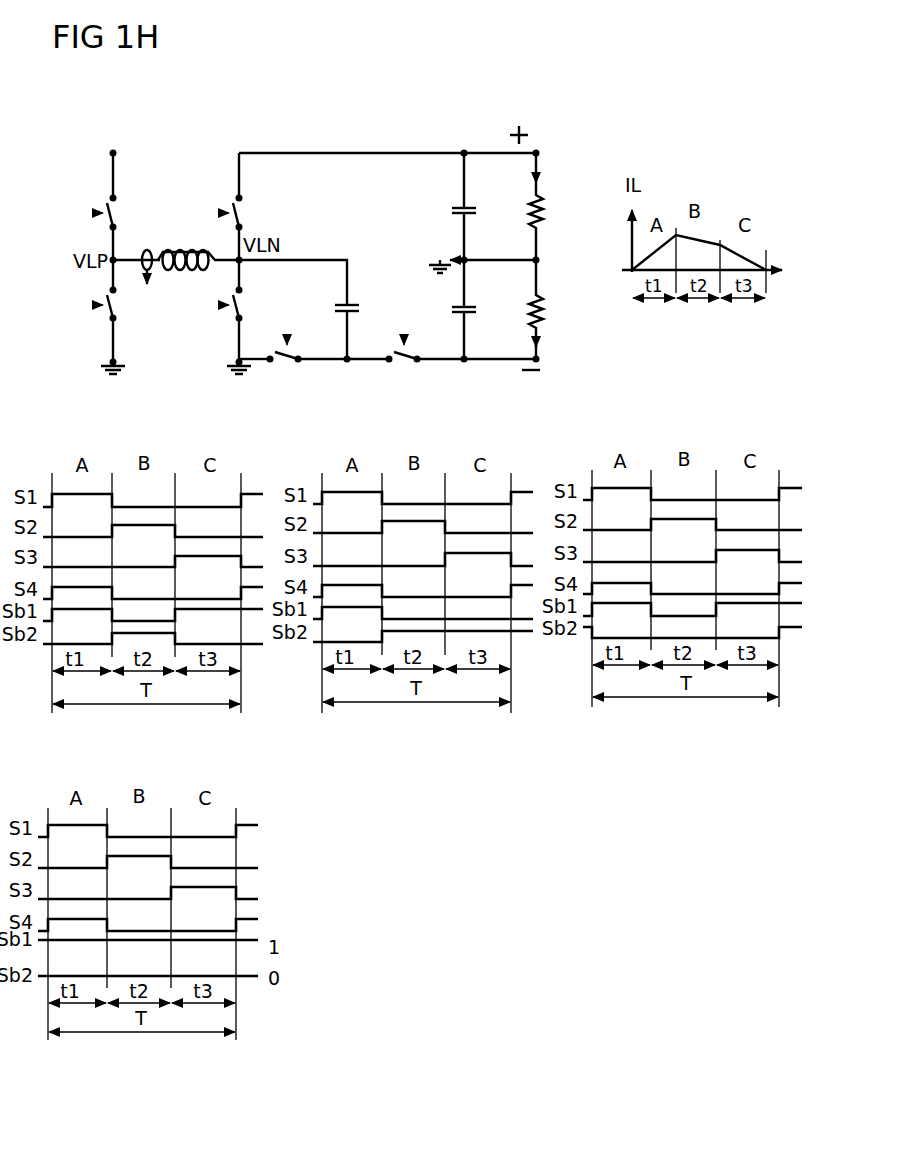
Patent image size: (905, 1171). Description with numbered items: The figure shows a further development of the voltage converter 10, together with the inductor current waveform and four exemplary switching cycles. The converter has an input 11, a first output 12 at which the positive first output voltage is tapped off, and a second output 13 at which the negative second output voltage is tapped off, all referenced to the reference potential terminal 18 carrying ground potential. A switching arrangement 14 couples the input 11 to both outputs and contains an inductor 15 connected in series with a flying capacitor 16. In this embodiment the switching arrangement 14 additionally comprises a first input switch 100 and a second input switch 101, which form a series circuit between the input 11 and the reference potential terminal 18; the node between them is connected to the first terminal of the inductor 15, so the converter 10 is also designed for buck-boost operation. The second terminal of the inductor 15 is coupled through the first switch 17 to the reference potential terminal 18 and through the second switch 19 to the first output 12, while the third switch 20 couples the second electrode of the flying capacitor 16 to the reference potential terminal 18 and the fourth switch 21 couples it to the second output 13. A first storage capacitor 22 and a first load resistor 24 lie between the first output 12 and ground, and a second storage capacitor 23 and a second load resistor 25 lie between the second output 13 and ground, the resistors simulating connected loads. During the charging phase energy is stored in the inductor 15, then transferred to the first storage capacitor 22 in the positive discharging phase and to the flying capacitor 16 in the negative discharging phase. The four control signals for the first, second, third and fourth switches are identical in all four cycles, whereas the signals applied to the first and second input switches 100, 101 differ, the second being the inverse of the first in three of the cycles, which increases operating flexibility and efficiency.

The voltage converter 10 is at (257, 131).
The input 11 is at (113, 153).
The first output 12 is at (544, 153).
The second output 13 is at (544, 357).
The switching arrangement 14 is at (175, 224).
The inductor 15 is at (176, 250).
The flying capacitor 16 is at (352, 314).
The first switch 17 is at (244, 312).
The reference potential terminal 18 is at (106, 372).
The second switch 19 is at (244, 222).
The third switch 20 is at (296, 352).
The fourth switch 21 is at (414, 353).
The first storage capacitor 22 is at (453, 221).
The second storage capacitor 23 is at (456, 313).
The first load resistor 24 is at (545, 209).
The second load resistor 25 is at (545, 312).
The first input switch 100 is at (106, 226).
The second input switch 101 is at (106, 319).